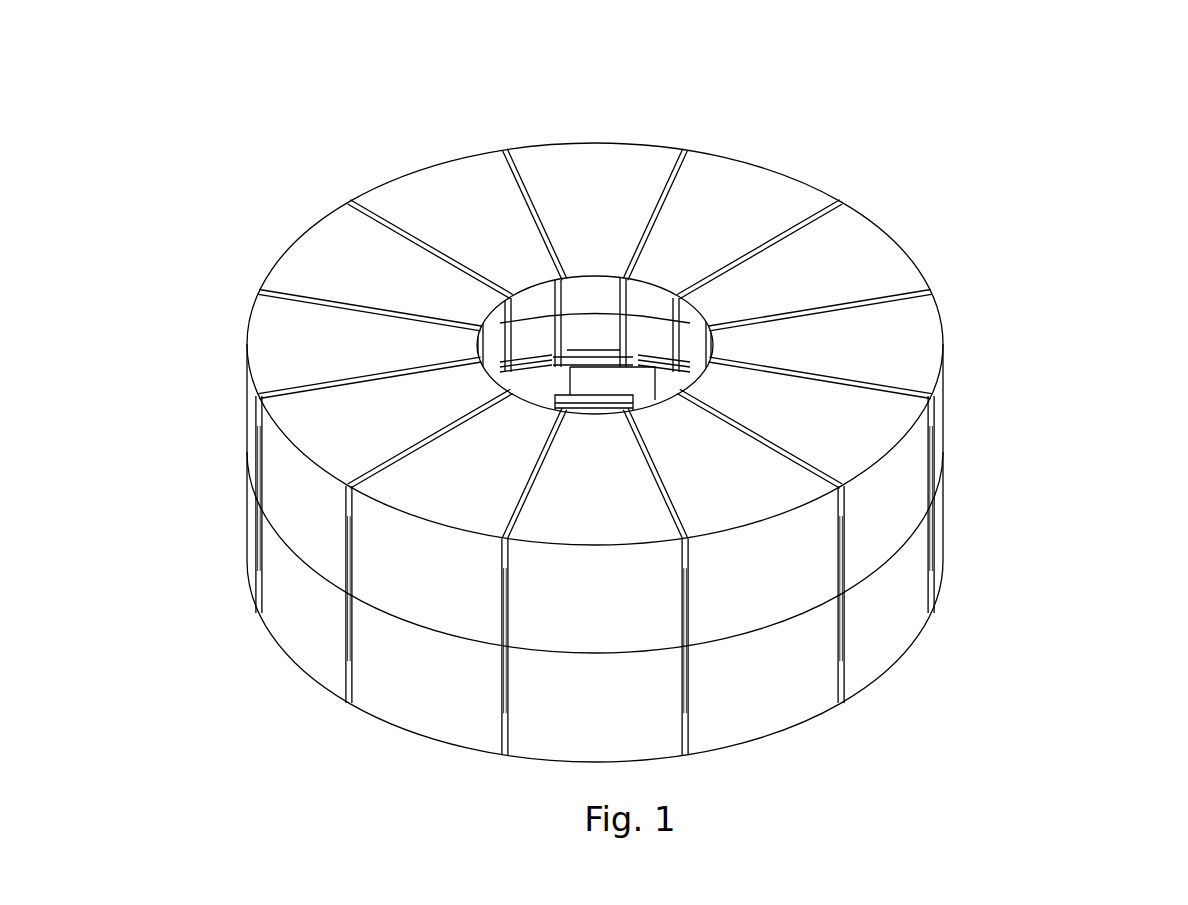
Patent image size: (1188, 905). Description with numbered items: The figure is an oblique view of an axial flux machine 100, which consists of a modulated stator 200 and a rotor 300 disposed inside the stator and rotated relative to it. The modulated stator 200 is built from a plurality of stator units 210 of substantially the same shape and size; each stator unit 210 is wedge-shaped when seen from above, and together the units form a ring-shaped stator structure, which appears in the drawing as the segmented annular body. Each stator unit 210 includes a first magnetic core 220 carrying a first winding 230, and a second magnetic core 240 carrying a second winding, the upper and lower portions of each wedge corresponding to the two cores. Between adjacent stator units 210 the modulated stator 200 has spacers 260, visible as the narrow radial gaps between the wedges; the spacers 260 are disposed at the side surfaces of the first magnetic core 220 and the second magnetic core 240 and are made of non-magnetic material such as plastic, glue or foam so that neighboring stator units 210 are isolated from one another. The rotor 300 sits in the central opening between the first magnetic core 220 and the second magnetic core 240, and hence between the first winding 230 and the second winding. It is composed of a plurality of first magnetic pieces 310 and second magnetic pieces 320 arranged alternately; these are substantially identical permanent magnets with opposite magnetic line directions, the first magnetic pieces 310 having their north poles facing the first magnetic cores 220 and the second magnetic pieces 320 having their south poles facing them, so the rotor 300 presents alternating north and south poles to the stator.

The axial flux machine 100 is at (222, 66).
The modulated stator 200 is at (968, 222).
The stator unit 210 is at (1097, 460).
The first magnetic core 220 is at (902, 483).
The first winding 230 is at (660, 340).
The second magnetic core 240 is at (910, 565).
The spacer 260 is at (930, 418).
The rotor 300 is at (668, 80).
The first magnetic piece 310 is at (537, 387).
The second magnetic piece 320 is at (603, 382).